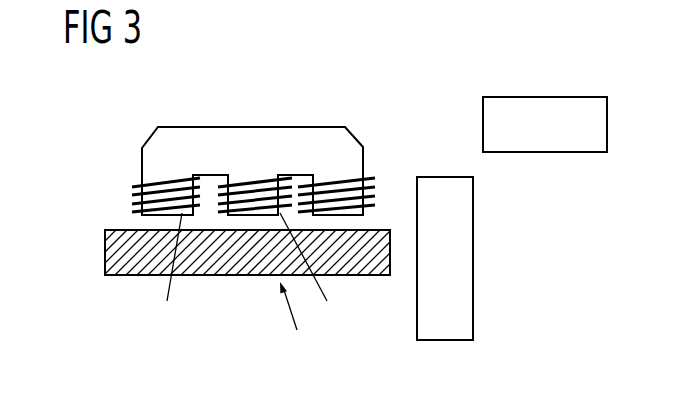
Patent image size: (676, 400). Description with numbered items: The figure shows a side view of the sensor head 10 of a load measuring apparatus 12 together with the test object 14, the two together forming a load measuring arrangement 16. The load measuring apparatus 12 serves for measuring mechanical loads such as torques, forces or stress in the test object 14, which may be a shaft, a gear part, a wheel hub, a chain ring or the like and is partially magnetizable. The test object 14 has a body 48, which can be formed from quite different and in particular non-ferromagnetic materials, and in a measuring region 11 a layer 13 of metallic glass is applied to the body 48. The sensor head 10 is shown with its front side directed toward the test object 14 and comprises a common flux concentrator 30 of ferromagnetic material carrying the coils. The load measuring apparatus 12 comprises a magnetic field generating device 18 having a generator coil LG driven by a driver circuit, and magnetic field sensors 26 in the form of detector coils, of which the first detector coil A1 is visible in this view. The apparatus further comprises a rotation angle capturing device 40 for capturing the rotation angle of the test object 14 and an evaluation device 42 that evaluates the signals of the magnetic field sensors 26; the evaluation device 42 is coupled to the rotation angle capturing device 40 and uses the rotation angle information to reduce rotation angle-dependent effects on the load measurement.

The sensor head 10 is at (368, 125).
The measuring region 11 is at (300, 322).
The load measuring apparatus 12 is at (314, 92).
The layer of metallic glass 13 is at (218, 275).
The test object 14 is at (247, 275).
The load measuring arrangement 16 is at (121, 163).
The magnetic field generating device 18 is at (238, 180).
The magnetic field sensor 26 is at (162, 178).
The flux concentrator 30 is at (266, 127).
The rotation angle capturing device 40 is at (445, 258).
The evaluation device 42 is at (545, 124).
The body 48 is at (123, 253).
The first detector coil A1 is at (167, 301).
The generator coil LG is at (322, 278).